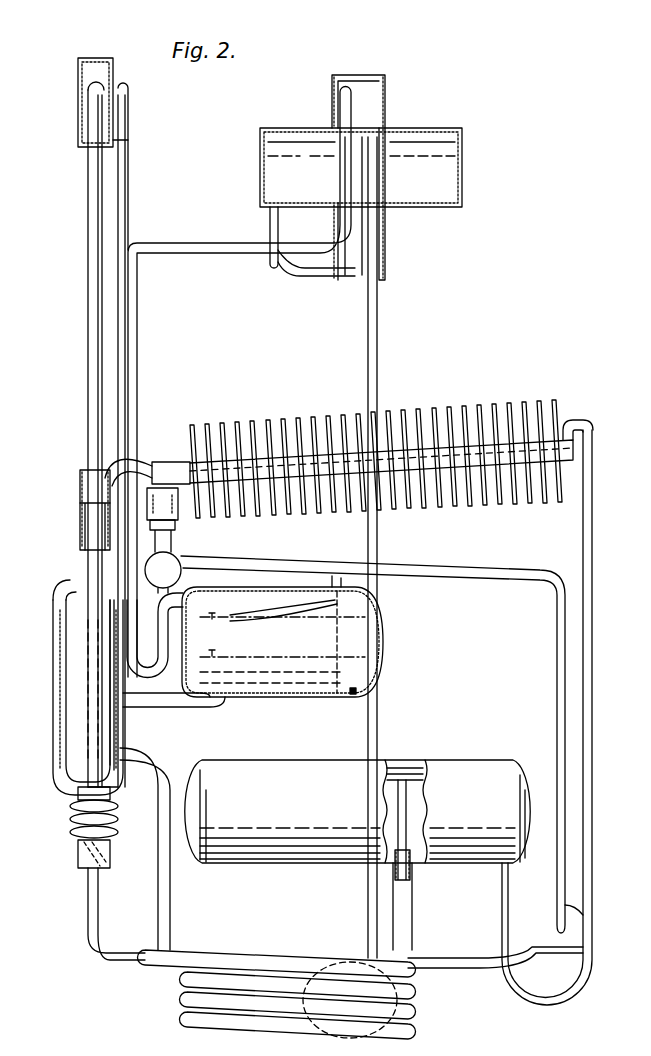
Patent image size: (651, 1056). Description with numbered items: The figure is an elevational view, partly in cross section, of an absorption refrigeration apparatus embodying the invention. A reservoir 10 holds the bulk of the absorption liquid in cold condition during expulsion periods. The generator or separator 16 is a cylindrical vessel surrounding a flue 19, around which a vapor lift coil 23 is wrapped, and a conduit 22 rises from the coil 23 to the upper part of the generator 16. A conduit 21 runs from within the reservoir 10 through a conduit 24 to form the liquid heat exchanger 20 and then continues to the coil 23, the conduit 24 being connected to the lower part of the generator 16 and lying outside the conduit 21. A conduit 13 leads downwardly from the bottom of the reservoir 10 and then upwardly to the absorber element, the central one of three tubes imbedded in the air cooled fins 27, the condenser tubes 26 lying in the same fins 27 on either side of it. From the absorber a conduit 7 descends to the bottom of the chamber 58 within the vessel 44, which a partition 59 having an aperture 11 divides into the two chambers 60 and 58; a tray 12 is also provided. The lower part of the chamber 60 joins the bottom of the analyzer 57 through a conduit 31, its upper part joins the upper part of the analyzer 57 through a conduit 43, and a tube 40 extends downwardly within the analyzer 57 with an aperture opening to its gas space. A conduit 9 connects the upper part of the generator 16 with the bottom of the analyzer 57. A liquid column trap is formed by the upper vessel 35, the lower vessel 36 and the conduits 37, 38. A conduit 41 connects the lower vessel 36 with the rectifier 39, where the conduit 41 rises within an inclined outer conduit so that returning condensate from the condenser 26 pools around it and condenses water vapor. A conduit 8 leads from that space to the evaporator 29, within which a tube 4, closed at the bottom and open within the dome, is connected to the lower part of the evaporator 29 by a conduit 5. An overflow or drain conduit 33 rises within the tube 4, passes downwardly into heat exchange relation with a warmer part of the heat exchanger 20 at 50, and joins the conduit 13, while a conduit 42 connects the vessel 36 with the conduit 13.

The tube 4 is at (385, 243).
The conduit 5 is at (268, 225).
The conduit 7 is at (167, 680).
The conduit 8 is at (340, 176).
The conduit 9 is at (52, 630).
The reservoir 10 is at (300, 768).
The aperture 11 is at (336, 585).
The tray 12 is at (285, 614).
The conduit 13 is at (592, 882).
The generator 16 is at (115, 728).
The flue 19 is at (90, 740).
The liquid heat exchanger 20 is at (277, 993).
The conduit 21 is at (406, 812).
The conduit 22 is at (55, 708).
The vapor lift coil 23 is at (78, 822).
The conduit 24 is at (172, 906).
The condenser 26 is at (372, 444).
The air cooled fins 27 is at (258, 420).
The evaporator 29 is at (420, 200).
The conduit 31 is at (205, 707).
The overflow or drain conduit 33 is at (377, 316).
The upper vessel 35 is at (78, 94).
The lower vessel 36 is at (168, 566).
The conduit 37 is at (128, 180).
The conduit 38 is at (128, 108).
The rectifier 39 is at (178, 525).
The tube 40 is at (88, 348).
The conduit 41 is at (197, 522).
The conduit 42 is at (476, 580).
The conduit 43 is at (105, 480).
The vessel 44 is at (295, 697).
The heat exchange portion 50 is at (350, 985).
The analyzer 57 is at (92, 525).
The chamber 58 is at (297, 632).
The partition 59 is at (337, 643).
The chamber 60 is at (267, 637).